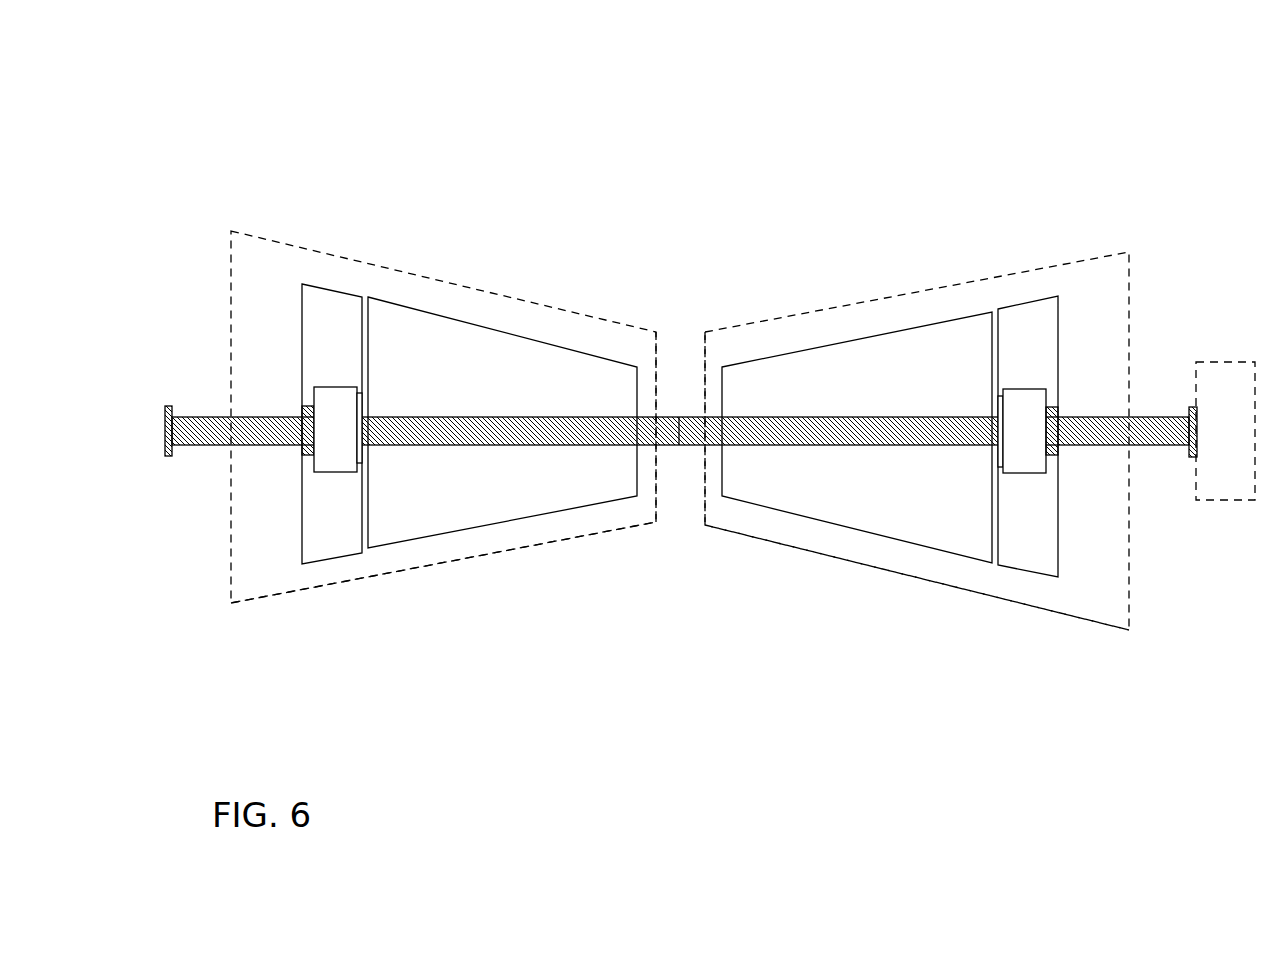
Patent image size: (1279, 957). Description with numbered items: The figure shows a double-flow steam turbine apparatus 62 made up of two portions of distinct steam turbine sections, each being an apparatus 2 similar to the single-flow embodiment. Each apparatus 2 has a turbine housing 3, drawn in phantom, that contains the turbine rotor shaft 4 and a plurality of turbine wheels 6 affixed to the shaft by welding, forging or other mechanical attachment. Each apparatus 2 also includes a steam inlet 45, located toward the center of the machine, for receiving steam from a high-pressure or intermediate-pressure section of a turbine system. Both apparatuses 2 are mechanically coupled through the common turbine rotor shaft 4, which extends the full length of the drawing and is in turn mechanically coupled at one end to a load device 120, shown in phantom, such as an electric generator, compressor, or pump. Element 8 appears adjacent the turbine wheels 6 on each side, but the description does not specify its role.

The double-flow steam turbine apparatus 62 is at (330, 143).
The apparatus 2 is at (455, 243).
The turbine housing 3 is at (483, 557).
The turbine rotor shaft 4 is at (943, 435).
The turbine wheels 6 is at (453, 393).
The end flange 8 is at (325, 532).
The steam inlet 45 is at (667, 353).
The load device 120 is at (1237, 395).